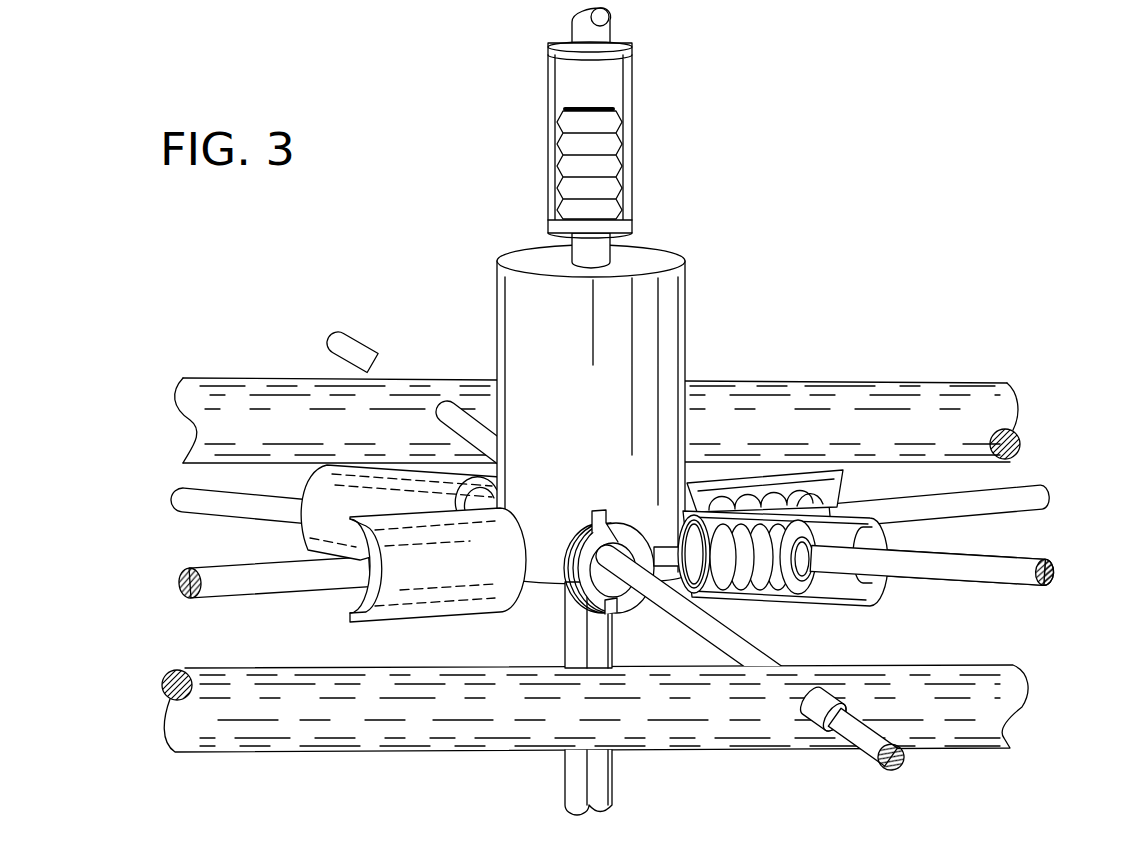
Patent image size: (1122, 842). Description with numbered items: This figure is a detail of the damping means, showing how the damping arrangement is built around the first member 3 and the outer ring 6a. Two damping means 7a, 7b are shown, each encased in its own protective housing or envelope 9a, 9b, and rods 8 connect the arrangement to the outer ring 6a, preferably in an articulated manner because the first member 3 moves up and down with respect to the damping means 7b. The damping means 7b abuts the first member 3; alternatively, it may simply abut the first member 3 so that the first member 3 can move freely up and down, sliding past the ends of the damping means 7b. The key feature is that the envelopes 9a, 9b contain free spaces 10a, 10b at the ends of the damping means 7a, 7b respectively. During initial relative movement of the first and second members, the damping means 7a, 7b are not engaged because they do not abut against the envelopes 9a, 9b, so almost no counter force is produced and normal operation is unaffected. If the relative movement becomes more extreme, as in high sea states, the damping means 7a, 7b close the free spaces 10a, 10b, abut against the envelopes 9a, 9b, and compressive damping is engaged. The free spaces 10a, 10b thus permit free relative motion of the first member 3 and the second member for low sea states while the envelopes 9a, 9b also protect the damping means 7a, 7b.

The first member 3 is at (533, 322).
The outer ring 6a is at (975, 383).
The damping means 7a is at (607, 143).
The damping means 7b is at (738, 593).
The rods 8 is at (1047, 560).
The protective housing or envelope 9a is at (632, 97).
The protective housing or envelope 9b is at (817, 607).
The free space 10a is at (571, 78).
The free space 10b is at (852, 593).